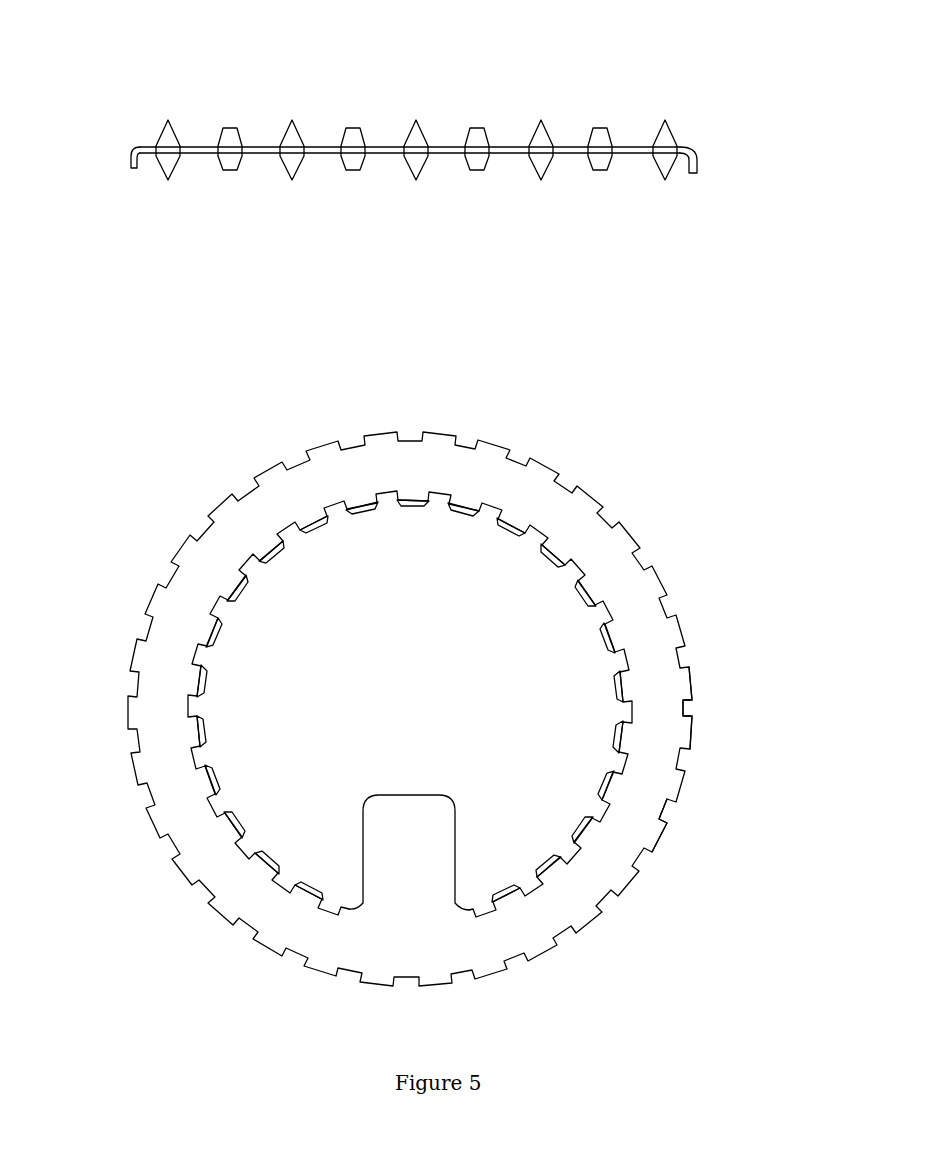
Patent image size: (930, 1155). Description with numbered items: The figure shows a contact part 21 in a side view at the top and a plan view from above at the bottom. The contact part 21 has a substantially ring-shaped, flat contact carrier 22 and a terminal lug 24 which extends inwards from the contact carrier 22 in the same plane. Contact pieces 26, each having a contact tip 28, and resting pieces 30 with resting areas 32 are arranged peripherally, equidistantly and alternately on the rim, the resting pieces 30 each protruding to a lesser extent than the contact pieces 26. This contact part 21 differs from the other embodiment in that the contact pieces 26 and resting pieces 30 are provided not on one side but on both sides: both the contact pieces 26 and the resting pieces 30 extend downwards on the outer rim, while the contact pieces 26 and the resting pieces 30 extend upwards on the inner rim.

The contact part 21 is at (268, 132).
The contact carrier 22 is at (448, 143).
The terminal lug 24 is at (415, 828).
The contact pieces 26 is at (158, 127).
The contact tip 28 is at (168, 115).
The resting pieces 30 is at (239, 130).
The resting areas 32 is at (230, 120).